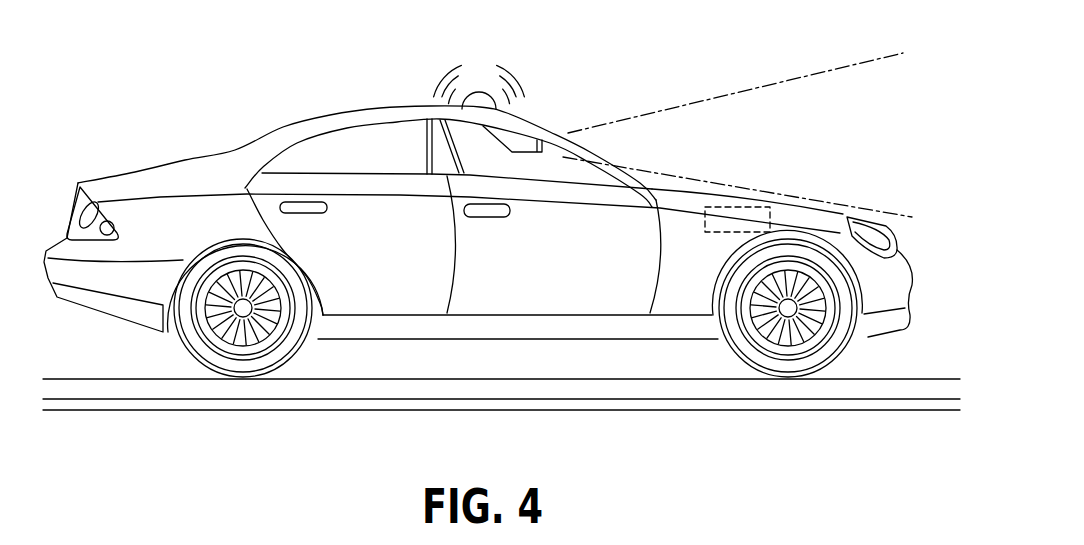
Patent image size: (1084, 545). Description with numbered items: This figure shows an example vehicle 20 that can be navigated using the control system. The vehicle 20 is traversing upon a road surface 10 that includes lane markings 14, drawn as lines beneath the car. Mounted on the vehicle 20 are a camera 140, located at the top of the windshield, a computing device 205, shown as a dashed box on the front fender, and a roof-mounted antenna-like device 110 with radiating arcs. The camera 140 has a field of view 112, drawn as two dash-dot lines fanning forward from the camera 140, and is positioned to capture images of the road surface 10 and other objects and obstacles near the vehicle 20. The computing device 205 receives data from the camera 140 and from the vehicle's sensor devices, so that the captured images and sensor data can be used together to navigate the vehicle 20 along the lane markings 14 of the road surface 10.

The vehicle 20 is at (335, 113).
The wireless communication module / antenna 110 is at (480, 92).
The camera 140 is at (527, 142).
The field of view 112 is at (757, 88).
The computing device 205 is at (757, 207).
The road surface 10 is at (540, 362).
The lane markings 14 is at (663, 410).